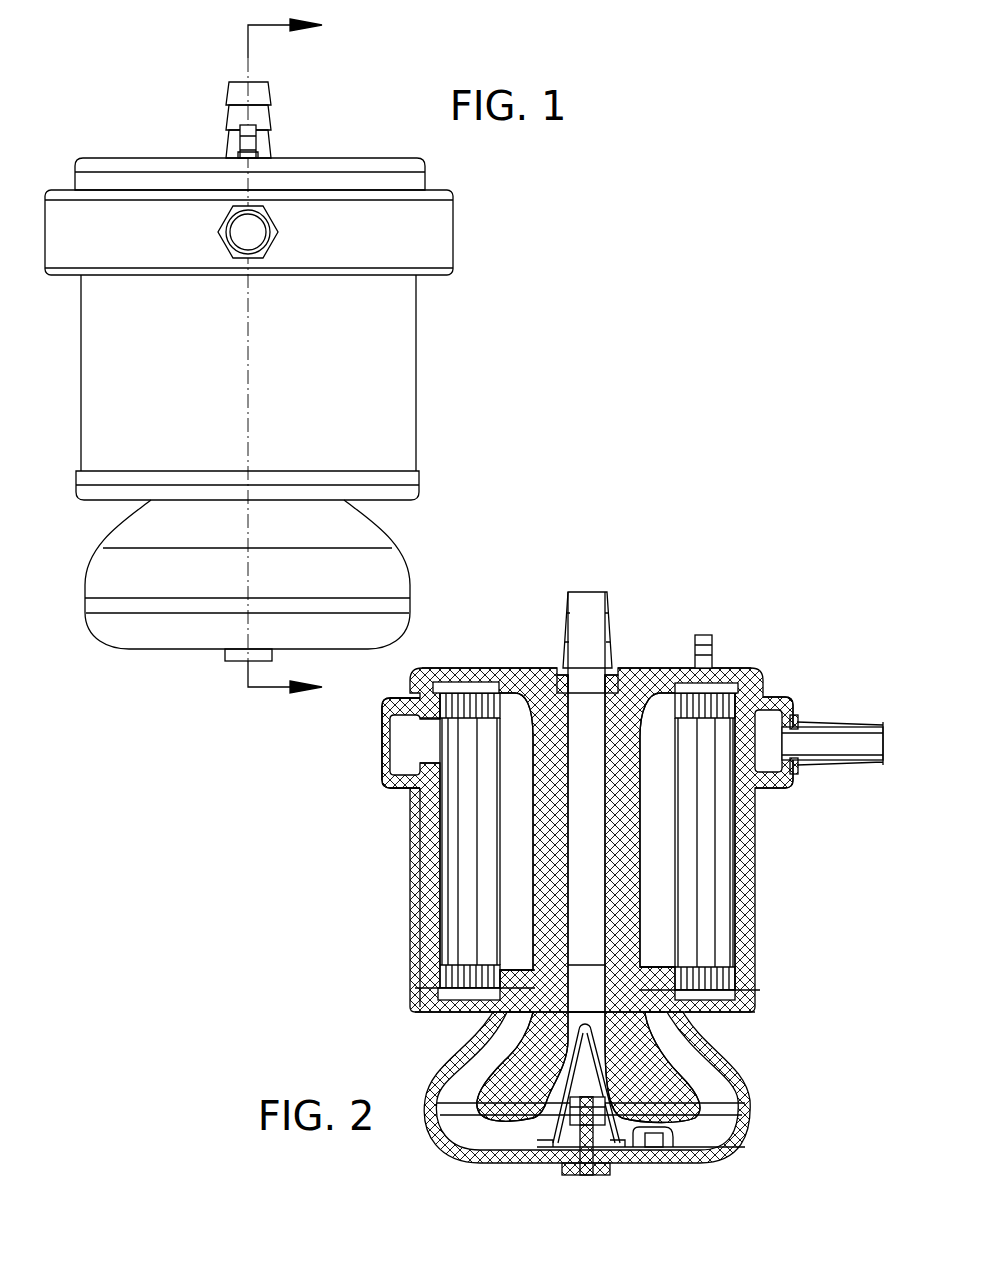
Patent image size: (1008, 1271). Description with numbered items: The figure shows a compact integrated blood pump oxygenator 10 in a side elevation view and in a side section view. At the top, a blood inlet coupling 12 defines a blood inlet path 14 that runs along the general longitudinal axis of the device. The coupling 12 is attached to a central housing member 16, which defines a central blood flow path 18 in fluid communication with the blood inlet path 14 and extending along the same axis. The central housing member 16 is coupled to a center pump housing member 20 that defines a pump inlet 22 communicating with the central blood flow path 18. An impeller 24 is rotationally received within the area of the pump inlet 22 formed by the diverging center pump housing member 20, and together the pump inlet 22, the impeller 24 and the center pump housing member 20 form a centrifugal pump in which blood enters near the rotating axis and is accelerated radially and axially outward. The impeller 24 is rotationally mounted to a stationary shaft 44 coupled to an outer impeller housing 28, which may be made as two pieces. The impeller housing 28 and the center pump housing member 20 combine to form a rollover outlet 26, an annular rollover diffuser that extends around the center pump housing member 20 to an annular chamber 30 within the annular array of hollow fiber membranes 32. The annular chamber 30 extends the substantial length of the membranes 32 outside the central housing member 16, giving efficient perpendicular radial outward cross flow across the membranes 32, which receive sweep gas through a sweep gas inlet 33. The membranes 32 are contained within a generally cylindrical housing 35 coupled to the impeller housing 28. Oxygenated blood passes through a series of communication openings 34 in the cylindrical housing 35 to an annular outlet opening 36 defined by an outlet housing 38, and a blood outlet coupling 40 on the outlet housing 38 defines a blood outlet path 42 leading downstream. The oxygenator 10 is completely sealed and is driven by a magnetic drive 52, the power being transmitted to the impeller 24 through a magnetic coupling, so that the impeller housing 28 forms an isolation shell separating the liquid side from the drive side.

In FIG. 1, the integrated blood pump oxygenator 10 is at (73, 135).
In FIG. 1, the blood inlet coupling 12 is at (267, 88).
In FIG. 2, the blood inlet coupling 12 is at (613, 620).
In FIG. 2, the blood inlet path 14 is at (572, 627).
In FIG. 2, the central housing member 16 is at (648, 700).
In FIG. 2, the central blood flow path 18 is at (572, 795).
In FIG. 2, the center pump housing member 20 is at (645, 1062).
In FIG. 2, the pump inlet 22 is at (571, 1000).
In FIG. 2, the impeller 24 is at (630, 1142).
In FIG. 2, the rollover outlet 26 is at (700, 1135).
In FIG. 1, the impeller housing 28 is at (294, 593).
In FIG. 2, the impeller housing 28 is at (470, 1160).
In FIG. 2, the annular chamber 30 is at (641, 890).
In FIG. 2, the hollow fiber membranes 32 is at (705, 835).
In FIG. 1, the sweep gas inlet 33 is at (232, 140).
In FIG. 2, the sweep gas inlet 33 is at (714, 648).
In FIG. 2, the communication openings 34 is at (430, 735).
In FIG. 1, the cylindrical housing 35 is at (296, 340).
In FIG. 2, the cylindrical housing 35 is at (752, 880).
In FIG. 2, the annular outlet opening 36 is at (770, 700).
In FIG. 1, the outlet housing 38 is at (346, 247).
In FIG. 2, the outlet housing 38 is at (393, 752).
In FIG. 1, the blood outlet coupling 40 is at (272, 210).
In FIG. 2, the blood outlet coupling 40 is at (838, 723).
In FIG. 2, the blood outlet path 42 is at (809, 757).
In FIG. 2, the stationary shaft 44 is at (580, 1172).
In FIG. 2, the magnetic drive 52 is at (655, 1150).